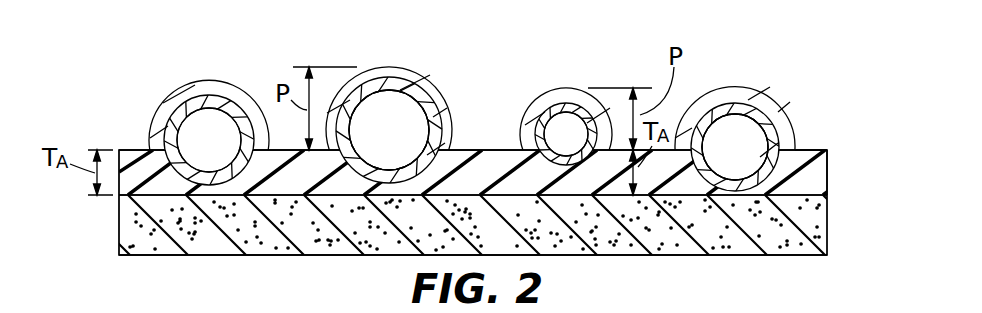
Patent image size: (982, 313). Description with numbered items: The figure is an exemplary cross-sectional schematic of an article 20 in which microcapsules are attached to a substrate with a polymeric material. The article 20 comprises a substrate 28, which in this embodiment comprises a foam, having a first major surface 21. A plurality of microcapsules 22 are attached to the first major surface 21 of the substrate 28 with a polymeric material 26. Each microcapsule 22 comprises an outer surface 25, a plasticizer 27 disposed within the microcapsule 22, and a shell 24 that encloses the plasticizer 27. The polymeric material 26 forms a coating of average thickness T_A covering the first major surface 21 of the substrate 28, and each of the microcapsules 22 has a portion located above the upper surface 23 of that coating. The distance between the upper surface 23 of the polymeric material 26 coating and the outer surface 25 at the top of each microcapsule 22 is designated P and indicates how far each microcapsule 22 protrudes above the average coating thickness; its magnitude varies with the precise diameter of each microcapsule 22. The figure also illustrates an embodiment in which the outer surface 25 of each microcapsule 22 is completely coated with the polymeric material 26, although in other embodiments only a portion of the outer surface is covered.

The article 20 is at (88, 124).
The first major surface 21 is at (813, 196).
The microcapsules 22 is at (560, 123).
The upper surface 23 is at (474, 148).
The shell 24 is at (389, 86).
The outer surface 25 is at (210, 97).
The polymeric material 26 is at (800, 158).
The plasticizer 27 is at (403, 147).
The substrate 28 is at (143, 228).